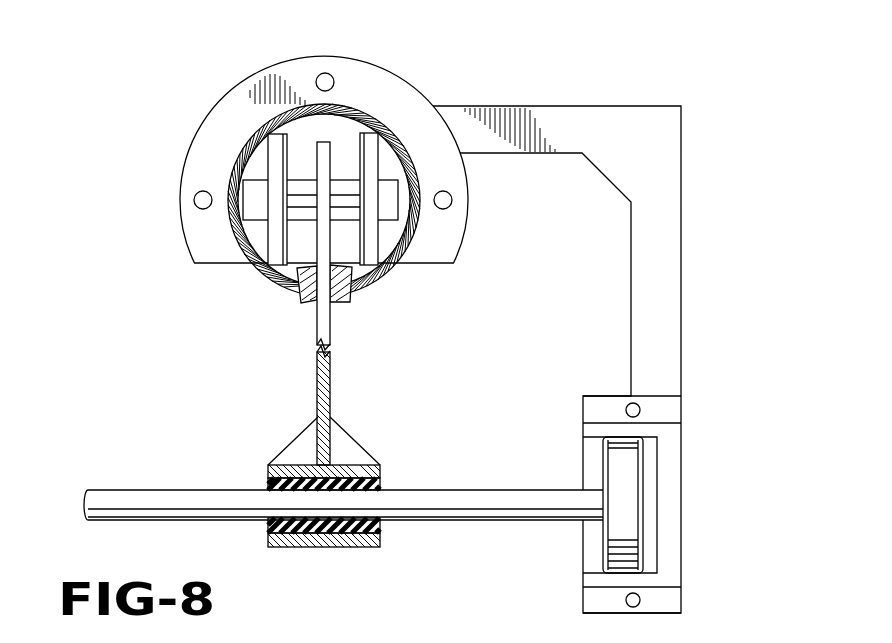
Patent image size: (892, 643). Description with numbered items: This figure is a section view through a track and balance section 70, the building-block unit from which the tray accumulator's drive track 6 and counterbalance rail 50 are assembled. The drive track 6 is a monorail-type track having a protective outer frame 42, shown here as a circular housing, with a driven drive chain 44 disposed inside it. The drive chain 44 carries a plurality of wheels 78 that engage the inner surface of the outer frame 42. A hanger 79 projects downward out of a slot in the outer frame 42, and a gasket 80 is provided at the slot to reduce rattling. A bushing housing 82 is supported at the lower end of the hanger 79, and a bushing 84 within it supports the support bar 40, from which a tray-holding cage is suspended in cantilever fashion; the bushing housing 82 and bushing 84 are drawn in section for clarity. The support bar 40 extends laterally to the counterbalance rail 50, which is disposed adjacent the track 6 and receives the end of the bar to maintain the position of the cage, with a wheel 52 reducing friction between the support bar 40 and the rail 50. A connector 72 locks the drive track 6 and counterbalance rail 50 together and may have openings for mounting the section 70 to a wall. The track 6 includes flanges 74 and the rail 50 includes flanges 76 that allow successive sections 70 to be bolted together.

The drive track 6 is at (246, 274).
The support bar 40 is at (175, 498).
The outer frame 42 is at (233, 168).
The drive chain 44 is at (344, 136).
The counterbalance rail 50 is at (581, 548).
The wheel 52 is at (628, 500).
The track and balance section 70 is at (619, 82).
The connector 72 is at (668, 293).
The flange 74 is at (218, 122).
The flange 76 is at (593, 409).
The wheel 78 is at (253, 205).
The hanger 79 is at (330, 370).
The gasket 80 is at (343, 306).
The bushing housing 82 is at (352, 548).
The bushing 84 is at (353, 480).